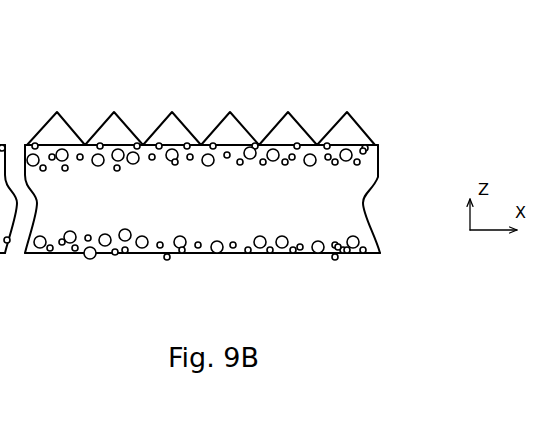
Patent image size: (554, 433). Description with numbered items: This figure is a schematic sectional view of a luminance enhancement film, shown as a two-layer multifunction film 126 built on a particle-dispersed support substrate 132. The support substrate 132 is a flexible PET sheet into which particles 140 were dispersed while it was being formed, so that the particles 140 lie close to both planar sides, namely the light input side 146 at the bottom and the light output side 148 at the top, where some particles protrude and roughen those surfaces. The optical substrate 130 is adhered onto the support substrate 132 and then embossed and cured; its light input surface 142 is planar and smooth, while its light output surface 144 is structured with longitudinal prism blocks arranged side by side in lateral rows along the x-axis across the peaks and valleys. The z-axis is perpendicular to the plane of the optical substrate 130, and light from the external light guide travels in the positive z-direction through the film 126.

The two-layer multifunction film 126 is at (226, 180).
The optical substrate 130 is at (221, 100).
The support substrate 132 is at (374, 216).
The particles 140 is at (152, 252).
The light input surface 142 is at (213, 128).
The light output surface 144 is at (200, 118).
The light input surface 146 is at (283, 256).
The light output side 148 is at (58, 145).